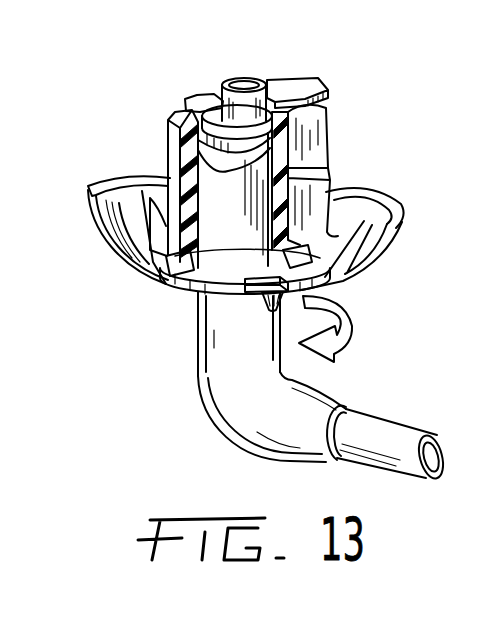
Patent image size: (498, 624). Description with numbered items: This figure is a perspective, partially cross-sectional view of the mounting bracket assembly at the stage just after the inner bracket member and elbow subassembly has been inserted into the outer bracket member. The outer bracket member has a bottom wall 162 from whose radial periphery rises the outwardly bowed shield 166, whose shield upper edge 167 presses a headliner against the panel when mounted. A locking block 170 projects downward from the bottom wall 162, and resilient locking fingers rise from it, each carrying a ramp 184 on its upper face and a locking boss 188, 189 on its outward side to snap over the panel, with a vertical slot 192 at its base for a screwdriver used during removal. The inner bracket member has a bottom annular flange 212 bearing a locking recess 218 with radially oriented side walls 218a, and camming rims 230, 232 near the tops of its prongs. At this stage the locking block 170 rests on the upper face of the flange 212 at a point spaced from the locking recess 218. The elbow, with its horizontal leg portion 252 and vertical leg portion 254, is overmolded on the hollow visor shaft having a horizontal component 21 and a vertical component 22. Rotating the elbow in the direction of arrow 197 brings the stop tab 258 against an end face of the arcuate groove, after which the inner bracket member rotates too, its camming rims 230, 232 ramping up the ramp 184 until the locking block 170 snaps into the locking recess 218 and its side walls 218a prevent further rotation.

The horizontal component of visor shaft 21 is at (388, 432).
The vertical component of visor shaft 22 is at (228, 80).
The bottom wall 162 is at (283, 250).
The shield 166 is at (116, 223).
The shield upper edge 167 is at (98, 183).
The locking block 170 is at (163, 262).
The ramp 184 is at (318, 112).
The locking boss 188 is at (322, 178).
The locking boss 189 is at (170, 152).
The vertical slot 192 is at (168, 213).
The arrow 197 is at (355, 333).
The annular flange 212 is at (182, 283).
The locking recess 218 is at (258, 275).
The radially oriented side walls 218a is at (303, 293).
The camming rim 230 is at (300, 85).
The camming rim 232 is at (190, 97).
The horizontal leg portion 252 is at (292, 430).
The vertical leg portion 254 is at (200, 377).
The stop tab 258 is at (267, 296).